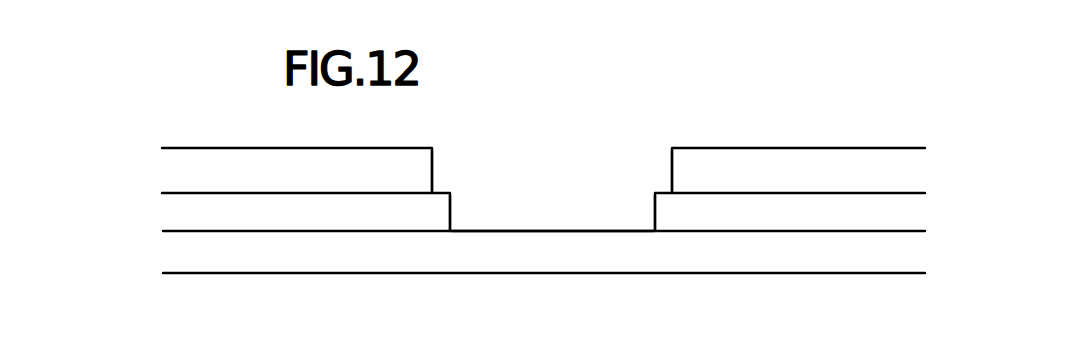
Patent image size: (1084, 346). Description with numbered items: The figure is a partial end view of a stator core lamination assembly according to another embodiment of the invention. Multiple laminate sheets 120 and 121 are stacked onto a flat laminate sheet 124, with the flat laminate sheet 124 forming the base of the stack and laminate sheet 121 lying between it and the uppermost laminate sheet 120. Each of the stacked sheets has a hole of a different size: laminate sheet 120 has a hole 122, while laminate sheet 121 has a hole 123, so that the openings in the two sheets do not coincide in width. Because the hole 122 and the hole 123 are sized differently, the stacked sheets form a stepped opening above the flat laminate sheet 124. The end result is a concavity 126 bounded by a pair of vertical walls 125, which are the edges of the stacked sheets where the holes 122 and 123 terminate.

The laminate sheet 120 is at (178, 172).
The laminate sheet 121 is at (183, 213).
The hole 122 is at (447, 170).
The hole 123 is at (457, 212).
The flat laminate sheet 124 is at (173, 253).
The vertical walls 125 is at (655, 206).
The concavity 126 is at (578, 213).